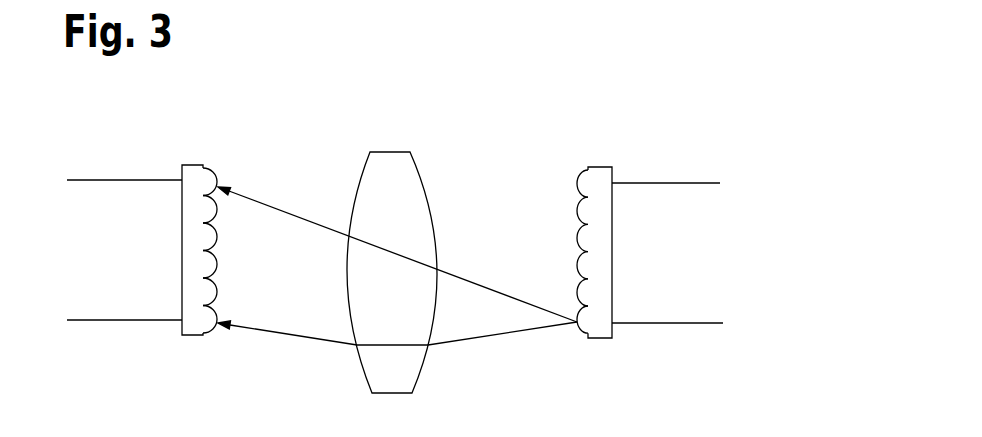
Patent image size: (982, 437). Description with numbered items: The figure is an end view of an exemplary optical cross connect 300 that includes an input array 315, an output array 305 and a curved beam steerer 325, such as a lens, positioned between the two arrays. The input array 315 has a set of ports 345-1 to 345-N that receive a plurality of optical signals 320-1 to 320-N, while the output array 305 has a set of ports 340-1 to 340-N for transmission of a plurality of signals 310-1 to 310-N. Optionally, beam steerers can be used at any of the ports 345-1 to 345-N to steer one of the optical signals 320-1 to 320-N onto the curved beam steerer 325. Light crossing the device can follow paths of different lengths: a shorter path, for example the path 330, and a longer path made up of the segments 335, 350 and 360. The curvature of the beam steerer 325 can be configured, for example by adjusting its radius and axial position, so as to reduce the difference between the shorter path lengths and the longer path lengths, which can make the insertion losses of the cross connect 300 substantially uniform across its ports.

The optical cross connect 300 is at (768, 232).
The output array 305 is at (193, 155).
The transmitted signal 310-1 is at (95, 180).
The transmitted signal 310-N is at (97, 320).
The input array 315 is at (603, 160).
The optical signal 320-1 is at (708, 182).
The optical signal 320-N is at (697, 322).
The curved beam steerer 325 is at (388, 152).
The path 330 is at (468, 280).
The path segment 335 is at (468, 340).
The output port 340-1 is at (217, 175).
The output port 340-N is at (215, 317).
The input port 345-1 is at (577, 182).
The input port 345-N is at (578, 327).
The path segment 350 is at (385, 347).
The path segment 360 is at (290, 337).